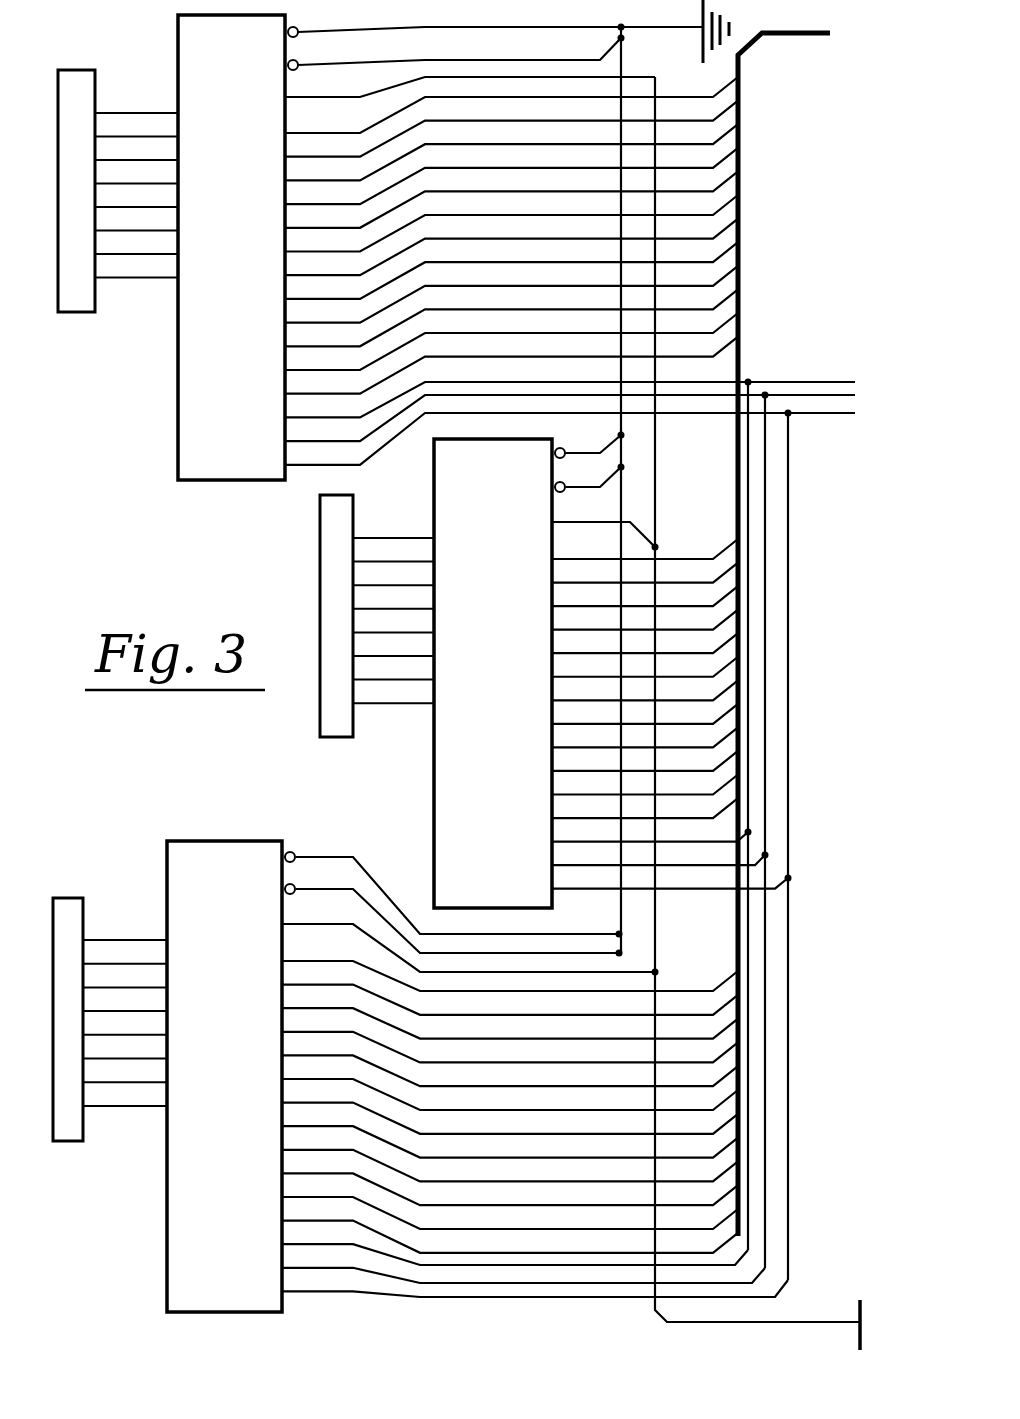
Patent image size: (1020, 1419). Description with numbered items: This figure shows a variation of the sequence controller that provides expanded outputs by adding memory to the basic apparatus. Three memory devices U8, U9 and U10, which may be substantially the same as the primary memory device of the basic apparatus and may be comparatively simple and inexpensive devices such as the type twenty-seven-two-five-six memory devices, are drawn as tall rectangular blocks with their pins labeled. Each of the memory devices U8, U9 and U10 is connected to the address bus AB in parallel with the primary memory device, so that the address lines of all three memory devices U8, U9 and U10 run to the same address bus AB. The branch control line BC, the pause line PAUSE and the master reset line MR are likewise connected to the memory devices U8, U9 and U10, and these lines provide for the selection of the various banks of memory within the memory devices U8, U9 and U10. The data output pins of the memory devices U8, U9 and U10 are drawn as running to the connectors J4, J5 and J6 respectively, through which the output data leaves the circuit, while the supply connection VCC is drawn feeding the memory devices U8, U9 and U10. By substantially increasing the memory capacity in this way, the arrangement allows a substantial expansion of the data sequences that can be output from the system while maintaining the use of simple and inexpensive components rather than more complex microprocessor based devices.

The connector J4 is at (118, 169).
The connector J5 is at (350, 616).
The connector J6 is at (107, 995).
The memory device U8 is at (516, 240).
The memory device U9 is at (613, 668).
The memory device U10 is at (477, 1072).
The address bus AB is at (818, 40).
The branch control line BC is at (768, 382).
The pause line PAUSE is at (833, 395).
The master reset line MR is at (835, 418).
The VCC supply VCC is at (760, 713).